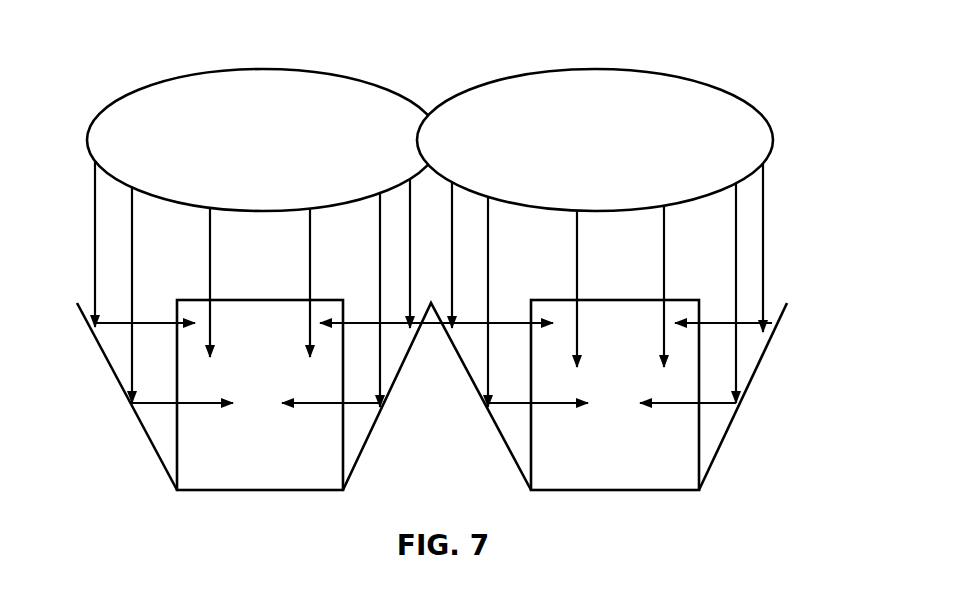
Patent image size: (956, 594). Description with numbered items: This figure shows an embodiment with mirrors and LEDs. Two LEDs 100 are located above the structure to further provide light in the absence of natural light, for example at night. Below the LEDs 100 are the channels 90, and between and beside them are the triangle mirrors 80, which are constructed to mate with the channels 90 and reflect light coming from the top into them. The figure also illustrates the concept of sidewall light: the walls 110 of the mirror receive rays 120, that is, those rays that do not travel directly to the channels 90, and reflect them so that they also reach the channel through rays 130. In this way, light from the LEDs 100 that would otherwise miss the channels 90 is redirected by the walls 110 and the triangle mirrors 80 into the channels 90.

The LEDs 100 is at (220, 87).
The rays 120 is at (765, 256).
The walls of the mirror 110 is at (107, 360).
The rays 130 is at (745, 325).
The triangle mirrors 80 is at (431, 335).
The channels 90 is at (233, 462).